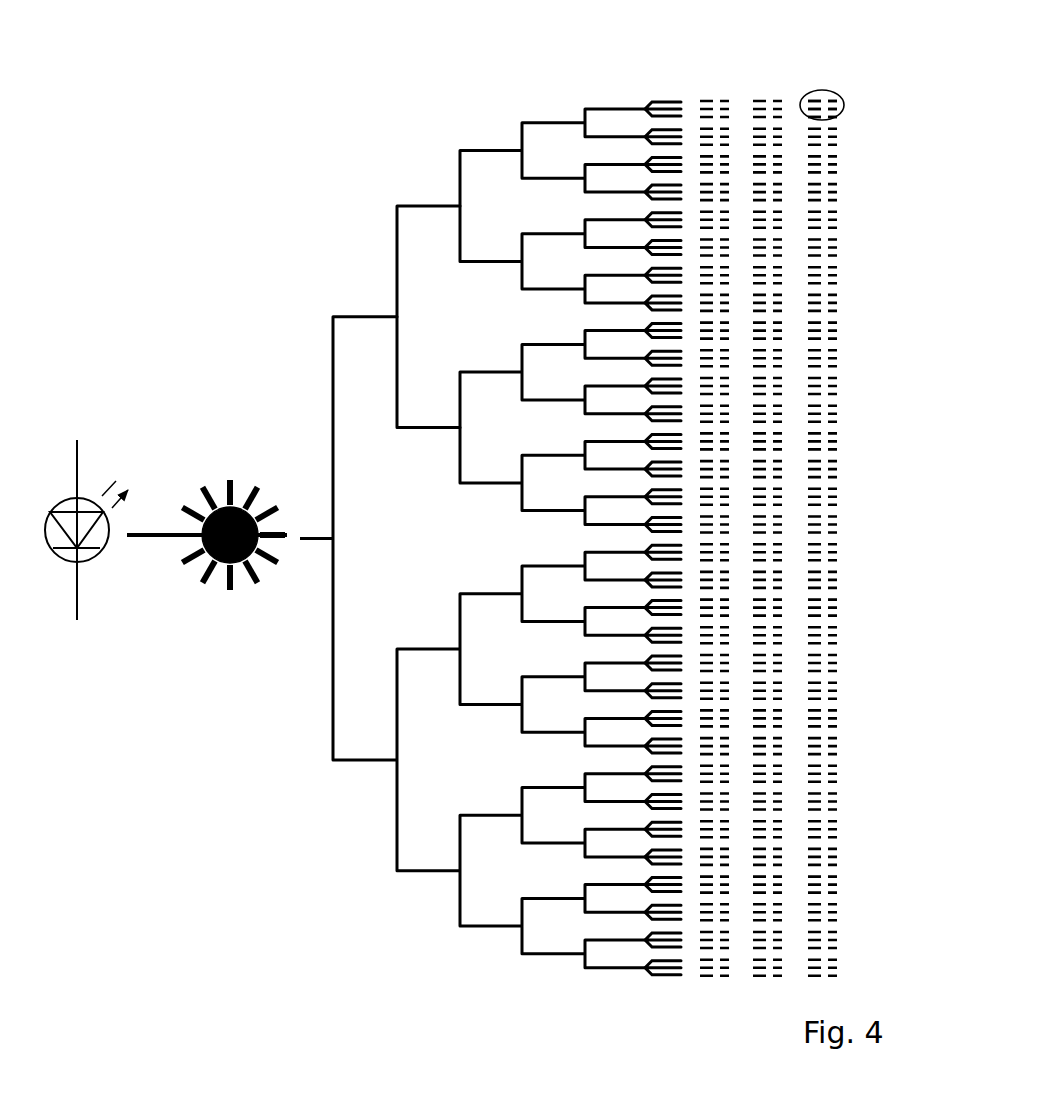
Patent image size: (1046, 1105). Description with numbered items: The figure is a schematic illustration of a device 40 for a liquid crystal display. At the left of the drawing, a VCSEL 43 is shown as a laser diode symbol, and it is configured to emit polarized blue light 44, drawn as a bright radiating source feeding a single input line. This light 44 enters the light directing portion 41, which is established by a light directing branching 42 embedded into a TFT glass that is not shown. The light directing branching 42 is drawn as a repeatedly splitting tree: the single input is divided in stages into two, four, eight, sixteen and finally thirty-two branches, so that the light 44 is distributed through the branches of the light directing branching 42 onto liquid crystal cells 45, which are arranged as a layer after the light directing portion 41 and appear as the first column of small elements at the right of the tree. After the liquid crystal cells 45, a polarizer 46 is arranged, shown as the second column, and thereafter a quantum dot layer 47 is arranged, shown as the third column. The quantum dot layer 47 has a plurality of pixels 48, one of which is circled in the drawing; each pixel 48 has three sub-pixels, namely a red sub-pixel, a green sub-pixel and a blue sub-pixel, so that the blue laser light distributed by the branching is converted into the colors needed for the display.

The device 40 is at (220, 116).
The light directing portion 41 is at (481, 106).
The light directing branching 42 is at (431, 207).
The VCSEL 43 is at (88, 492).
The polarized blue light 44 is at (237, 507).
The liquid crystal cells 45 is at (724, 80).
The polarizer 46 is at (770, 78).
The quantum dot layer 47 is at (818, 57).
The pixels 48 is at (841, 93).